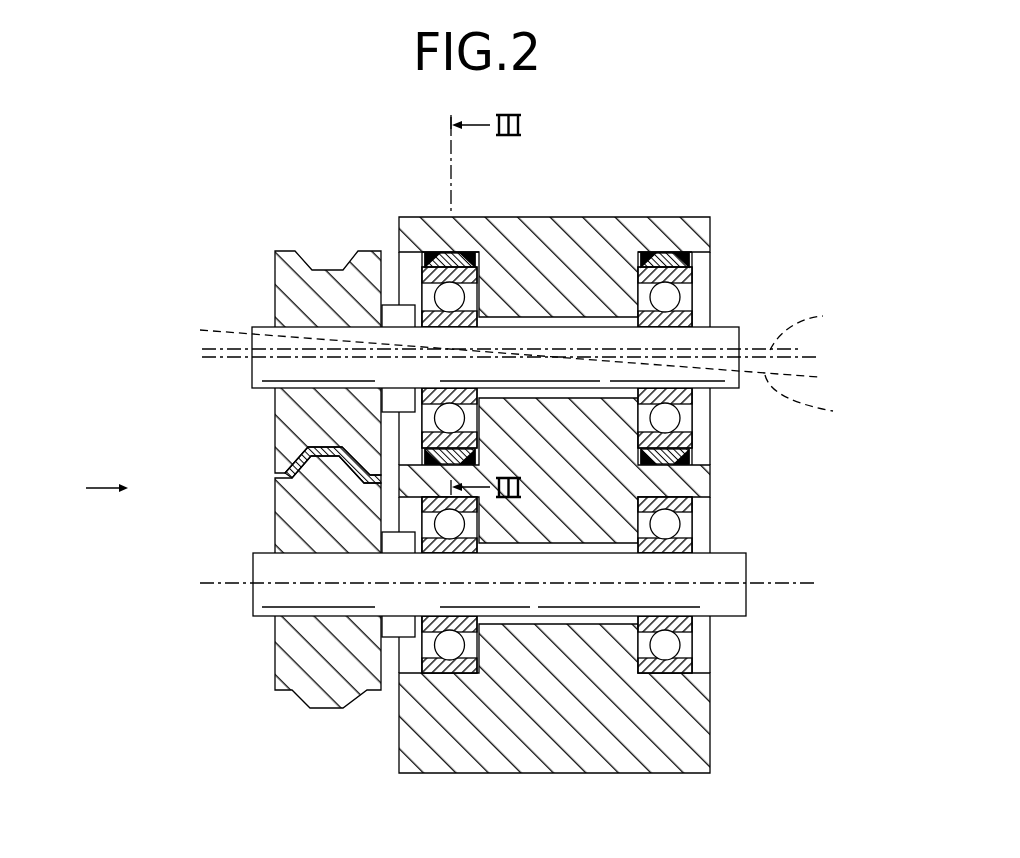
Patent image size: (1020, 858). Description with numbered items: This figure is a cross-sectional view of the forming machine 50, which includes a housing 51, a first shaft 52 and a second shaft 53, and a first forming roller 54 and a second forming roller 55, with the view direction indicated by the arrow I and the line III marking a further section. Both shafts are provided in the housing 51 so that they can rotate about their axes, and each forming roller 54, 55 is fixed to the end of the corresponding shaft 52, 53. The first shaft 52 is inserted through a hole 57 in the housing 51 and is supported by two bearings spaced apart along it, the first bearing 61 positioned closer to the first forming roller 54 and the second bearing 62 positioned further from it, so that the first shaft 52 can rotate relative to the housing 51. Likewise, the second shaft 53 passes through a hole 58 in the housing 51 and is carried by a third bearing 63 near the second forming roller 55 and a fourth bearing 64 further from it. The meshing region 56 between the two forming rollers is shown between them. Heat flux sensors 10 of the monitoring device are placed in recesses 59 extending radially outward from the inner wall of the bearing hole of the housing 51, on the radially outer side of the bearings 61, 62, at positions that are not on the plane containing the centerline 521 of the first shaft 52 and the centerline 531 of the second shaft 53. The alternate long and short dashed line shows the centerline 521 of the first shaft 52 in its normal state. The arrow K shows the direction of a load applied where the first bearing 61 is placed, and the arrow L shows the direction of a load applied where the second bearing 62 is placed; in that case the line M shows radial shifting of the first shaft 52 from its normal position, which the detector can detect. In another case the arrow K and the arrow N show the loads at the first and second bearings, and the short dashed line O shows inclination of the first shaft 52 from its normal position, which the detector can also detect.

The heat flux sensor 10 is at (437, 260).
The forming machine 50 is at (628, 188).
The housing 51 is at (588, 243).
The first shaft 52 is at (717, 380).
The centerline of the first shaft 521 is at (236, 358).
The second shaft 53 is at (718, 598).
The centerline of the second shaft 531 is at (234, 585).
The first forming roller 54 is at (290, 272).
The second forming roller 55 is at (290, 648).
The meshing portion 56 is at (288, 472).
The hole 57 is at (553, 320).
The hole 58 is at (575, 624).
The recess 59 is at (490, 262).
The first bearing 61 is at (418, 272).
The second bearing 62 is at (694, 278).
The third bearing 63 is at (428, 668).
The fourth bearing 64 is at (683, 668).
The arrow K is at (194, 332).
The arrow L is at (828, 378).
The alternate long dashed line and two short dashed lines M is at (823, 316).
The arrow N is at (834, 370).
The short dashed line O is at (814, 402).
The view direction I is at (97, 488).
The section III is at (486, 306).